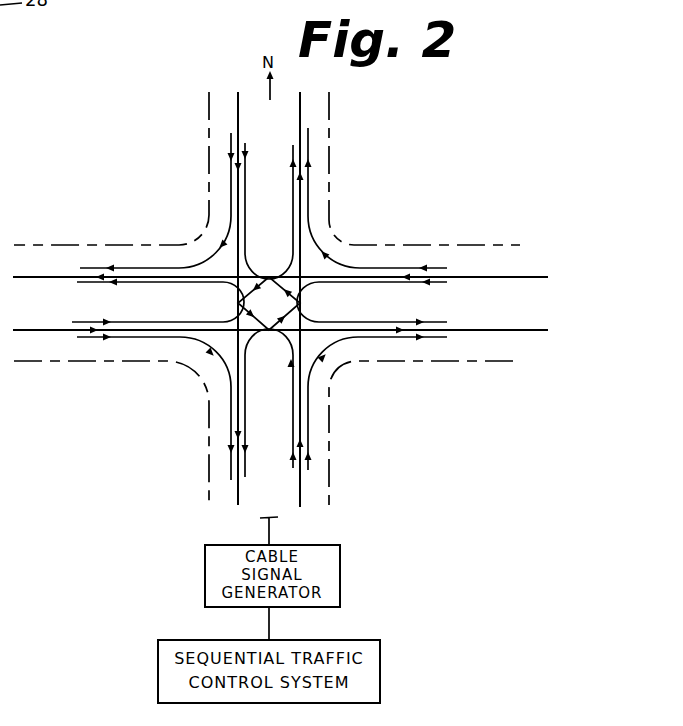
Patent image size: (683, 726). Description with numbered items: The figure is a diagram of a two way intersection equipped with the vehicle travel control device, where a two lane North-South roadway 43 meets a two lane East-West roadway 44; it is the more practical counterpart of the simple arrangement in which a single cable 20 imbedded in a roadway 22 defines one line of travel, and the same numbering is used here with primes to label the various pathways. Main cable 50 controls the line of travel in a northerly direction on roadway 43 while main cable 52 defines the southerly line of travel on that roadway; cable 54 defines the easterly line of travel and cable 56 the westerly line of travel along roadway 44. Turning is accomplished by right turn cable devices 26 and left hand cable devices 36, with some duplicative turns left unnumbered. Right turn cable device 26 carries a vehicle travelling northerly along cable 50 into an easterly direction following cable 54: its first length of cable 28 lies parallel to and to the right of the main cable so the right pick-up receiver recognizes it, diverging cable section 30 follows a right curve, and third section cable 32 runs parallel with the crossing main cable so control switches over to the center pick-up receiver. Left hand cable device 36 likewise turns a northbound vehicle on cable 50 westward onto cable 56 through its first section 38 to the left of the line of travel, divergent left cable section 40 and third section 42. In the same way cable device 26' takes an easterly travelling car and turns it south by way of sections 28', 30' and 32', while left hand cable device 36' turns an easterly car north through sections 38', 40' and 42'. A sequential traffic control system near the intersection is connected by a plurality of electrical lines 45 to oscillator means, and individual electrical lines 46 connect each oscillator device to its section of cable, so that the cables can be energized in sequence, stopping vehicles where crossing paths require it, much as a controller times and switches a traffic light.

The cable 20 is at (0, 52).
The roadway 22 is at (0, 82).
The right turn cable device 26 is at (347, 376).
The right turn cable device 26' is at (193, 368).
The first length of cable 28 is at (343, 428).
The first section of cable 28' is at (128, 371).
The diverging cable section 30 is at (379, 364).
The diverging cable section 30' is at (118, 434).
The third section cable 32 is at (430, 364).
The third section cable 32' is at (195, 433).
The left hand cable device 36 is at (275, 382).
The left hand cable device 36' is at (190, 308).
The first section of cable 38 is at (274, 434).
The first section of cable 38' is at (143, 312).
The divergent left cable section 40 is at (269, 355).
The divergent left cable section 40' is at (211, 293).
The third section 42 is at (150, 293).
The third section 42' is at (271, 212).
The North-South roadway 43 is at (277, 482).
The East-West roadway 44 is at (503, 312).
The electrical lines 45 is at (272, 627).
The electrical lines 46 is at (123, 258).
The main cable 50 is at (304, 192).
The main cable 52 is at (238, 113).
The cable 54 is at (37, 330).
The cable 56 is at (490, 273).